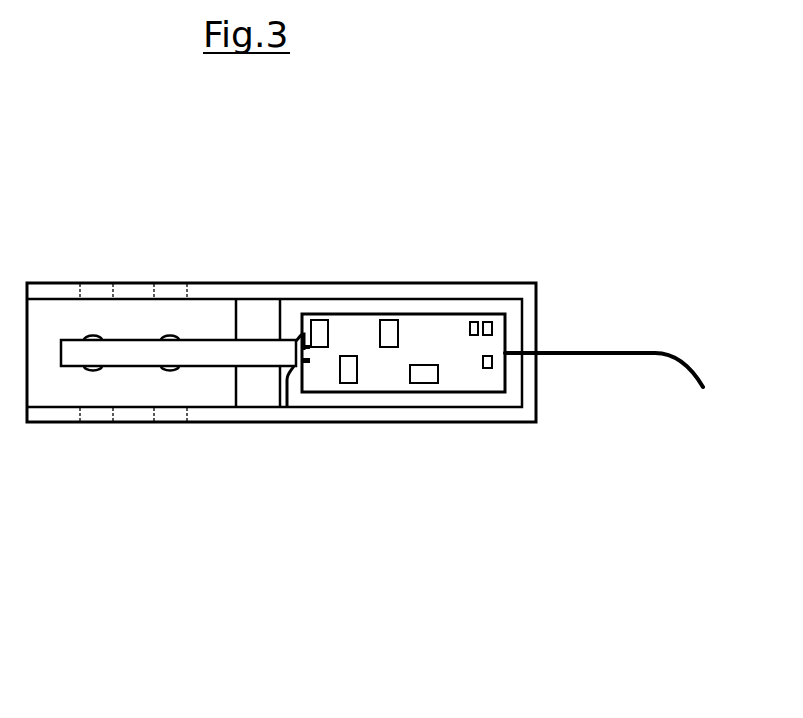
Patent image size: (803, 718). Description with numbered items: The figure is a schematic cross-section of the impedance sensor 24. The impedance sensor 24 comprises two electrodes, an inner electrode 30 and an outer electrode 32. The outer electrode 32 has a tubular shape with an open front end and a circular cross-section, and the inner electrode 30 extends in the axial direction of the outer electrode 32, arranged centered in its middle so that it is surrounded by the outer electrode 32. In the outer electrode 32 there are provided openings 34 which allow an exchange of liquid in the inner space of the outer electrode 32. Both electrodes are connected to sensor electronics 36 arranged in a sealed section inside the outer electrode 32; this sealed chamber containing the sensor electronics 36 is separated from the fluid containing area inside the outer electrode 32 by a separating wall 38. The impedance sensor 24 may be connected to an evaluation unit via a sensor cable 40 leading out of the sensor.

The impedance sensor 24 is at (312, 252).
The inner electrode 30 is at (133, 345).
The outer electrode 32 is at (41, 283).
The opening 34 is at (92, 285).
The sensor electronics 36 is at (387, 383).
The separating wall 38 is at (257, 397).
The sensor cable 40 is at (570, 355).